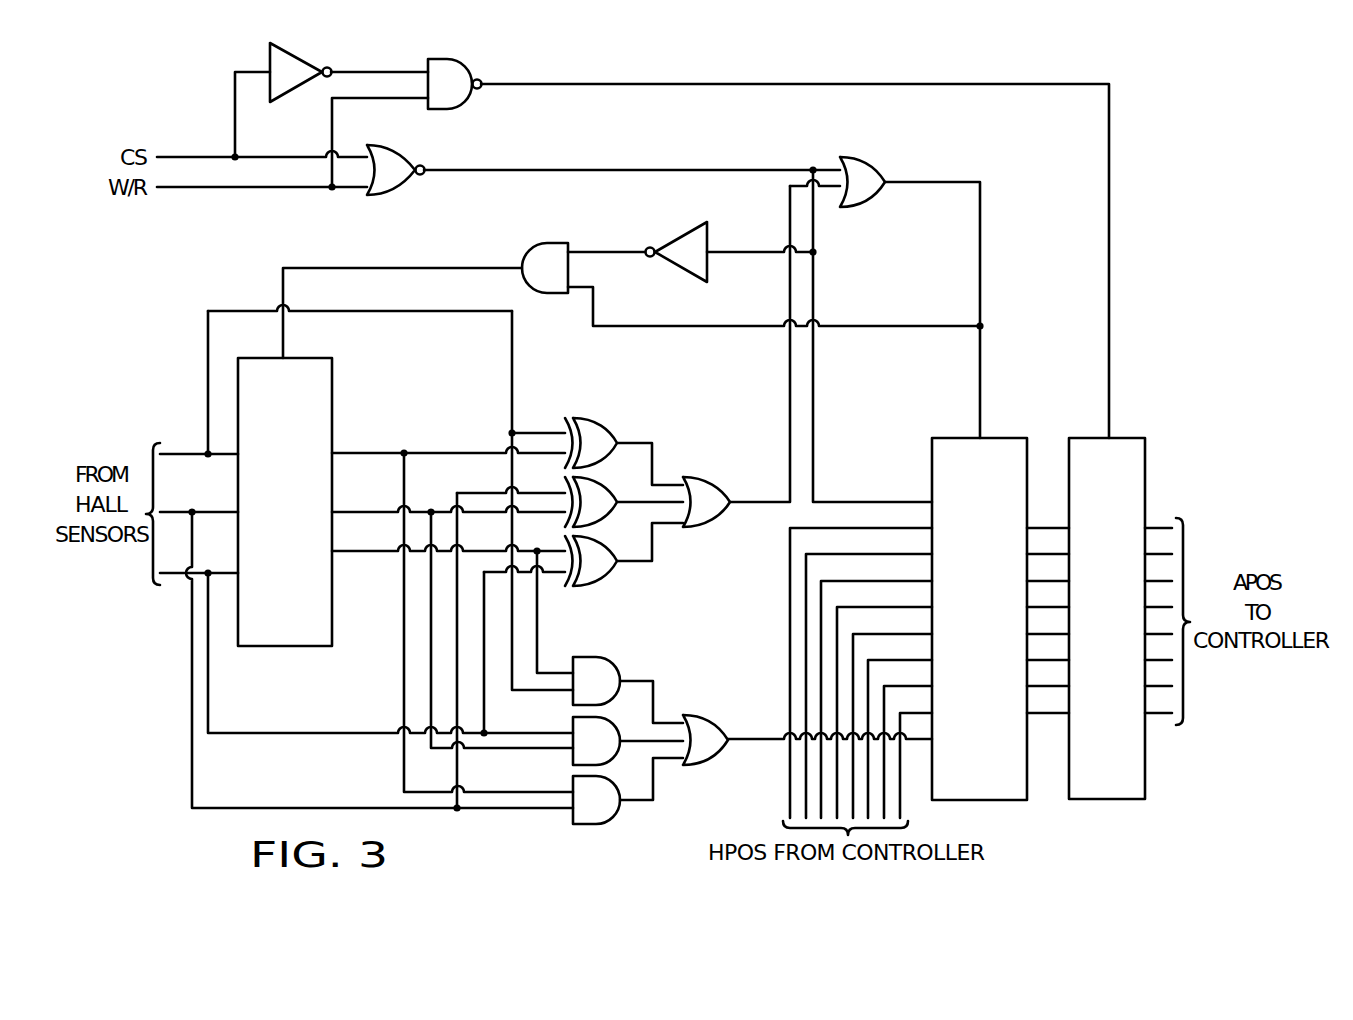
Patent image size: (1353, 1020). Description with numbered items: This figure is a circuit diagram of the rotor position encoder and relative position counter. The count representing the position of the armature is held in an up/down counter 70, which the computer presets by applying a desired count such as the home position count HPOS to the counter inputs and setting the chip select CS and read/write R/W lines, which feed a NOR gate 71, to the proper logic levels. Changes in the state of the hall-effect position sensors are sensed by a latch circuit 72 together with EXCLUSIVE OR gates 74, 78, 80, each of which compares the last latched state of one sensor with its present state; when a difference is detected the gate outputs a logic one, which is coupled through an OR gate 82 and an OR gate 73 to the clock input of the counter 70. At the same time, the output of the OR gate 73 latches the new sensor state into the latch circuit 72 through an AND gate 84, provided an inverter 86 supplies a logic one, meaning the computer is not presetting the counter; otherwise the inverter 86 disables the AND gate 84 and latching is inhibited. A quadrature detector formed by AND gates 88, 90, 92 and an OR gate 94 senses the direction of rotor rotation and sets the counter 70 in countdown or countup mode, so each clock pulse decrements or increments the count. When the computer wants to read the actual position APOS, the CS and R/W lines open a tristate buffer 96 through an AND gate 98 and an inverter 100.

The up/down counter 70 is at (1012, 447).
The NOR gate 71 is at (390, 177).
The latch circuit 72 is at (315, 405).
The OR gate 73 is at (862, 172).
The EXCLUSIVE OR gate 74 is at (595, 437).
The EXCLUSIVE OR gate 78 is at (596, 510).
The EXCLUSIVE OR gate 80 is at (600, 570).
The OR gate 82 is at (708, 487).
The AND gate 84 is at (548, 260).
The inverter 86 is at (692, 250).
The AND gate 88 is at (595, 672).
The AND gate 90 is at (595, 737).
The AND gate 92 is at (597, 805).
The OR gate 94 is at (705, 728).
The tristate buffer 96 is at (1128, 452).
The AND gate 98 is at (470, 72).
The inverter 100 is at (270, 60).